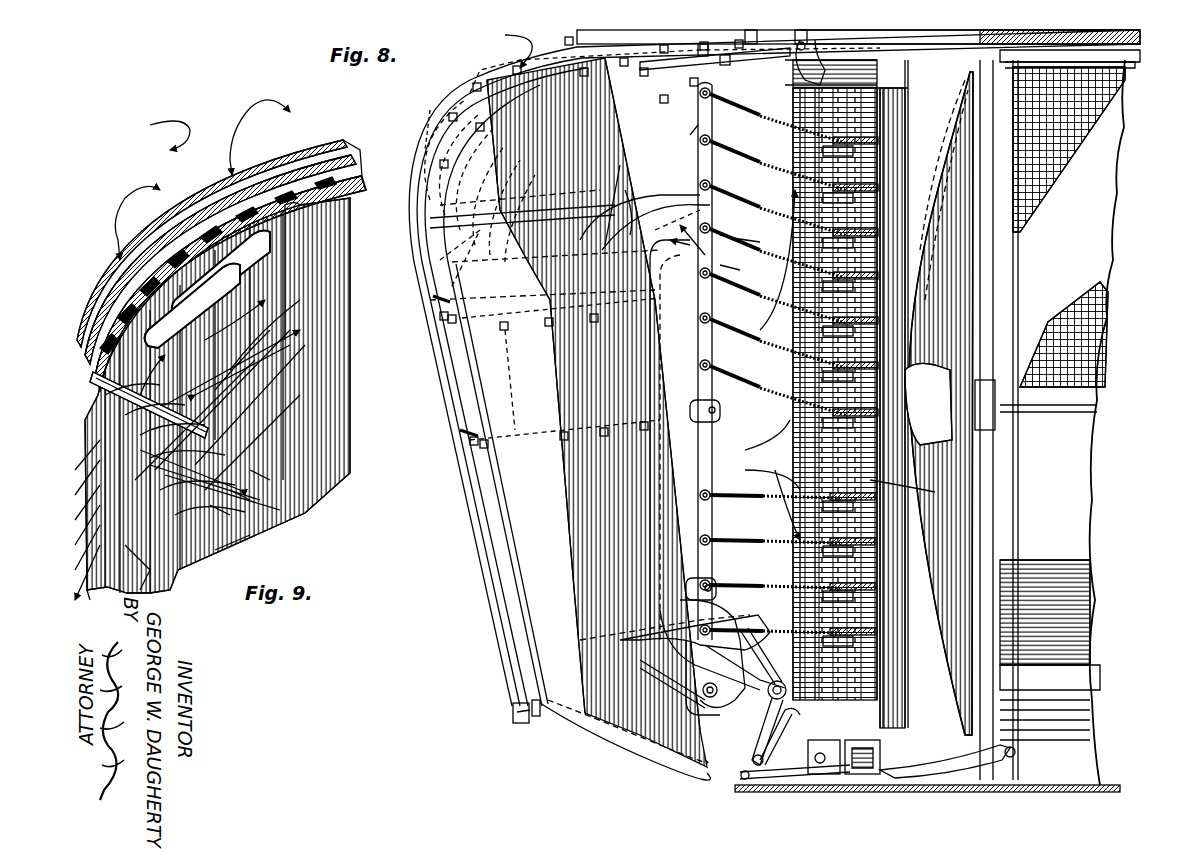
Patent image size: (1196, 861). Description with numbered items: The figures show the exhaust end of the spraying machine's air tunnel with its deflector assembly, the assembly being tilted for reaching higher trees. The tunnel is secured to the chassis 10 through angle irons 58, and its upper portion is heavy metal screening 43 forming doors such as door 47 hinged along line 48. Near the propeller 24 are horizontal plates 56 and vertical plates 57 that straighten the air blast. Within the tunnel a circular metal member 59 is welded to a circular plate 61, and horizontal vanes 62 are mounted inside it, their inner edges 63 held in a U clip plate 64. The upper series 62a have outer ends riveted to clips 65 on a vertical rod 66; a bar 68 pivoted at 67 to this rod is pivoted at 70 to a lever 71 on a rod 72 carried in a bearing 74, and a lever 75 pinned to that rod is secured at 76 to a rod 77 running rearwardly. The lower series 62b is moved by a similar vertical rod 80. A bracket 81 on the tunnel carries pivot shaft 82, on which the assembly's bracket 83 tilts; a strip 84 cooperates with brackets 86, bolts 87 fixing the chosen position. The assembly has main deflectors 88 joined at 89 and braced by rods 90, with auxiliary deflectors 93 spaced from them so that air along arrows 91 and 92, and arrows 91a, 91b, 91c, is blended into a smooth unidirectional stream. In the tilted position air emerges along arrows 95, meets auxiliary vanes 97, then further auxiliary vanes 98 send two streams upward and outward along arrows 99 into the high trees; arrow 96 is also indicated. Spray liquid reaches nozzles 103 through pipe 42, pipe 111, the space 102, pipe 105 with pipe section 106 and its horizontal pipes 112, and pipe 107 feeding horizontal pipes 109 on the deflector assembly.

In FIG. 8, the chassis 10 is at (1095, 726).
In FIG. 8, the propeller 24 is at (985, 508).
In FIG. 8, the flexible pipe 42 is at (1010, 765).
In FIG. 8, the heavy metal screening 43 is at (1110, 305).
In FIG. 8, the door 47 is at (1118, 90).
In FIG. 8, the hinge line 48 is at (1142, 36).
In FIG. 8, the horizontal metal plates 56 is at (905, 235).
In FIG. 8, the vertical plates 57 is at (905, 305).
In FIG. 8, the angle irons 58 is at (1102, 678).
In FIG. 8, the circular metal member 59 is at (800, 88).
In FIG. 8, the circular metal plate 61 is at (880, 775).
In FIG. 8, the horizontal vanes 62 is at (790, 215).
In FIG. 8, the upper series of vanes 62a is at (751, 437).
In FIG. 8, the lower series of vanes 62b is at (756, 472).
In FIG. 8, the inner edges of vanes 63 is at (912, 490).
In FIG. 8, the U clip plate 64 is at (880, 250).
In FIG. 8, the clips 65 is at (745, 108).
In FIG. 8, the vertical rod 66 is at (680, 128).
In FIG. 8, the pivot 67 is at (737, 265).
In FIG. 8, the bar 68 is at (740, 425).
In FIG. 8, the pivot 70 is at (700, 655).
In FIG. 8, the lever 71 is at (690, 680).
In FIG. 8, the rod 72 is at (765, 700).
In FIG. 8, the bearing 74 is at (776, 680).
In FIG. 8, the lever 75 is at (745, 770).
In FIG. 8, the connection 76 is at (760, 772).
In FIG. 8, the rod 77 is at (805, 778).
In FIG. 8, the vertical rod 80 is at (740, 520).
In FIG. 8, the bracket 81 is at (680, 698).
In FIG. 8, the pivot shaft 82 is at (620, 633).
In FIG. 9, the bracket 83 is at (95, 598).
In FIG. 9, the strip 84 is at (208, 432).
In FIG. 8, the strip 84 is at (645, 190).
In FIG. 8, the brackets 86 is at (749, 233).
In FIG. 8, the bolts 87 is at (670, 226).
In FIG. 9, the main deflectors 88 is at (350, 455).
In FIG. 8, the main deflectors 88 is at (500, 490).
In FIG. 9, the junction of main deflectors 89 is at (270, 355).
In FIG. 8, the junction of main deflectors 89 is at (655, 197).
In FIG. 8, the brace rods 90 is at (445, 265).
In FIG. 9, the arrow 91 is at (318, 490).
In FIG. 9, the arrow 91a is at (225, 525).
In FIG. 9, the arrow 91b is at (250, 515).
In FIG. 9, the arrow 91c is at (270, 500).
In FIG. 9, the arrow 92 is at (240, 550).
In FIG. 9, the auxiliary deflectors 93 is at (130, 585).
In FIG. 8, the auxiliary deflectors 93 is at (618, 202).
In FIG. 8, the arrows 95 is at (712, 190).
In FIG. 9, the air flow 96 is at (155, 132).
In FIG. 8, the air flow 96 is at (501, 45).
In FIG. 9, the auxiliary vanes 97 is at (282, 225).
In FIG. 8, the auxiliary vanes 97 is at (530, 258).
In FIG. 9, the further auxiliary vanes 98 is at (305, 136).
In FIG. 8, the further auxiliary vanes 98 is at (414, 122).
In FIG. 9, the arrows 99 is at (186, 173).
In FIG. 8, the space 102 is at (825, 32).
In FIG. 8, the nozzles 103 is at (500, 72).
In FIG. 8, the pipe 105 is at (805, 95).
In FIG. 8, the pipe section 106 is at (770, 30).
In FIG. 8, the pipe 107 is at (585, 740).
In FIG. 8, the horizontal pipes 109 is at (575, 55).
In FIG. 8, the pipe 111 is at (510, 688).
In FIG. 8, the horizontal pipes 112 is at (715, 42).